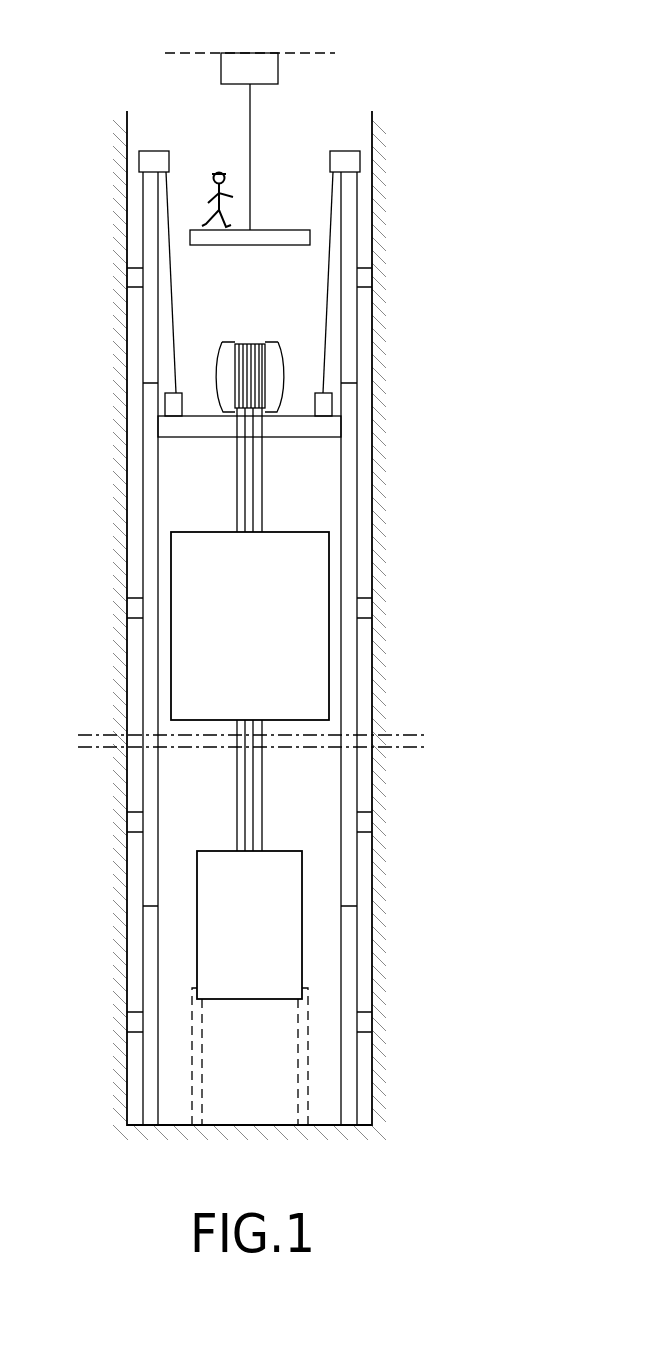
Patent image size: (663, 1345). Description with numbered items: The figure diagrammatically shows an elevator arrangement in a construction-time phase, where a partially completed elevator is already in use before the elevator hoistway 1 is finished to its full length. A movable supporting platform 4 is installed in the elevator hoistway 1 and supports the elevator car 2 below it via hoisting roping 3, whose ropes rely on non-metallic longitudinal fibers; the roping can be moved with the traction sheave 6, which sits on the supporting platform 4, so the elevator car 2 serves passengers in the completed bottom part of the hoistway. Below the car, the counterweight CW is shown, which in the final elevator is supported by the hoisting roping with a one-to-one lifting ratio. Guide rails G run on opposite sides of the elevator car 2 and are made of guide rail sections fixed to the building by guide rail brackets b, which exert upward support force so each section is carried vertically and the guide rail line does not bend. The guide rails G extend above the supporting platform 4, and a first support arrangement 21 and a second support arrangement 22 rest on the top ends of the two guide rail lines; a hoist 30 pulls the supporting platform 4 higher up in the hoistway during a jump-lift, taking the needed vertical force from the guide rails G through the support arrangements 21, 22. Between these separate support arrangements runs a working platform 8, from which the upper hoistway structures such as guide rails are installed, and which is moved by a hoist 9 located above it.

The elevator hoistway 1 is at (309, 828).
The elevator car 2 is at (300, 570).
The hoisting roping 3 is at (238, 482).
The supporting platform 4 is at (317, 437).
The traction sheave 6 is at (276, 373).
The working platform 8 is at (284, 230).
The hoist 9 is at (265, 70).
The first support arrangement 21 is at (152, 157).
The second support arrangement 22 is at (345, 157).
The hoist 30 is at (178, 397).
The guide rail brackets b is at (135, 275).
The guide rails G is at (150, 222).
The counterweight CW is at (302, 928).